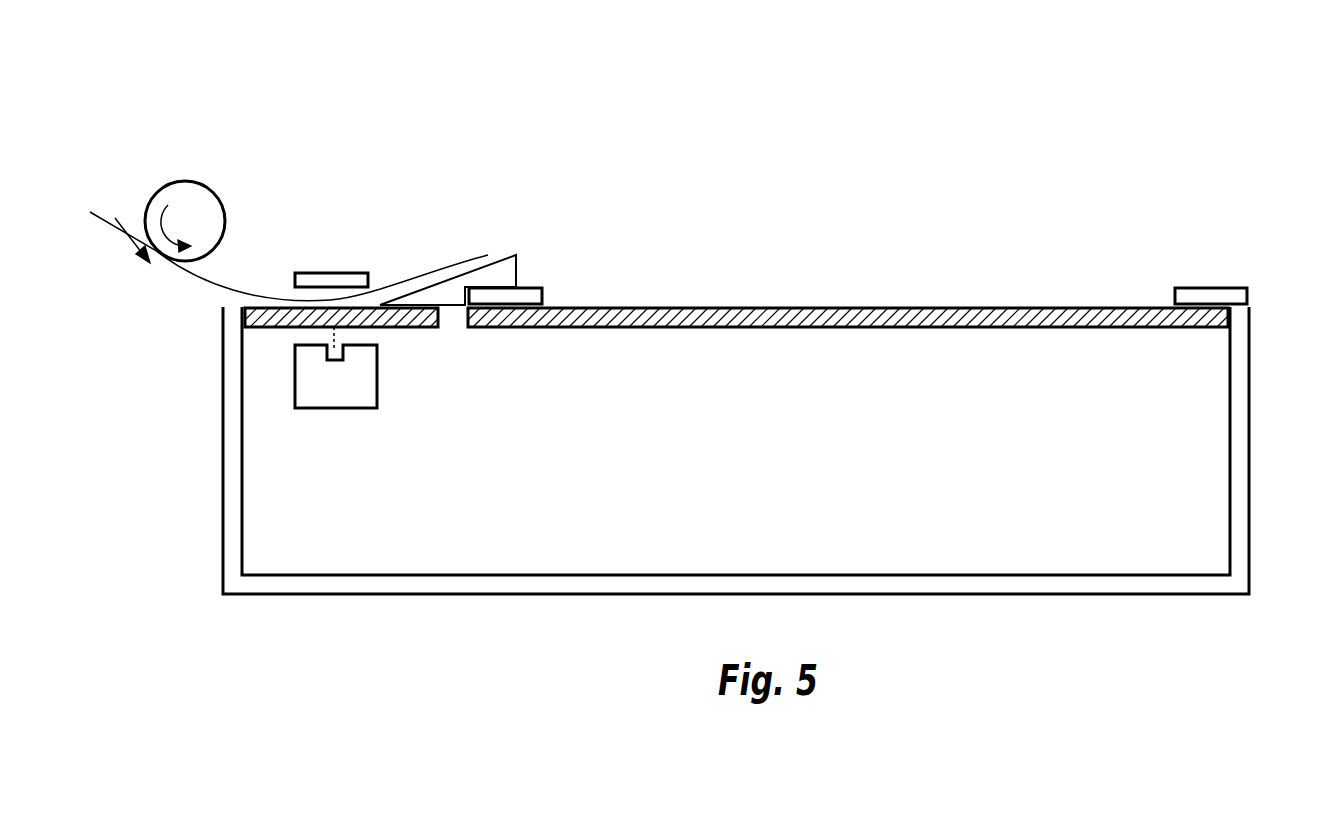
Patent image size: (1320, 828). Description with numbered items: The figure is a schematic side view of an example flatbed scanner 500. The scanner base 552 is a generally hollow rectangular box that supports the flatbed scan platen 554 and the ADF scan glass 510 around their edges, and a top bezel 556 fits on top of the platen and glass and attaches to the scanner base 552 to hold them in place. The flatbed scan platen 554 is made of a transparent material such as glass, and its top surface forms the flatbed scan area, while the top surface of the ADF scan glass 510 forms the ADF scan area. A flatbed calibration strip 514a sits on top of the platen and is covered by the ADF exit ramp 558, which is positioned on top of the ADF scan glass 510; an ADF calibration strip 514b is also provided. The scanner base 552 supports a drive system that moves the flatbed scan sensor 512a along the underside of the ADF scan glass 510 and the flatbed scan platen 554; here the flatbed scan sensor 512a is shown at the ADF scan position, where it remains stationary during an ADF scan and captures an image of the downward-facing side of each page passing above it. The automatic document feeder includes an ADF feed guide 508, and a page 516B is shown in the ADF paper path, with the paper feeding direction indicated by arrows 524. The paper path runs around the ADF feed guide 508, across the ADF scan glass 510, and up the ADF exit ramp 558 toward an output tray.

The flatbed scanner 500 is at (882, 102).
The ADF feed guide 508 is at (218, 197).
The ADF scan glass 510 is at (262, 328).
The flatbed scan sensor 512a is at (377, 383).
The flatbed calibration strip 514a is at (543, 290).
The ADF calibration strip 514b is at (335, 272).
The web film 516B is at (459, 272).
The arrows 524 is at (123, 240).
The scanner base 552 is at (1250, 512).
The flatbed scan platen 554 is at (1092, 328).
The top bezel 556 is at (1210, 288).
The ADF exit ramp 558 is at (517, 267).